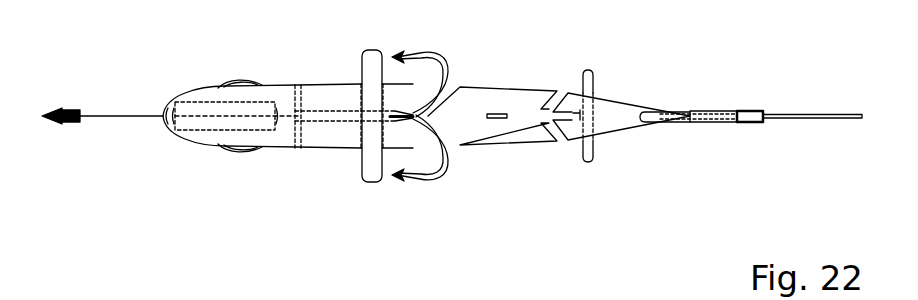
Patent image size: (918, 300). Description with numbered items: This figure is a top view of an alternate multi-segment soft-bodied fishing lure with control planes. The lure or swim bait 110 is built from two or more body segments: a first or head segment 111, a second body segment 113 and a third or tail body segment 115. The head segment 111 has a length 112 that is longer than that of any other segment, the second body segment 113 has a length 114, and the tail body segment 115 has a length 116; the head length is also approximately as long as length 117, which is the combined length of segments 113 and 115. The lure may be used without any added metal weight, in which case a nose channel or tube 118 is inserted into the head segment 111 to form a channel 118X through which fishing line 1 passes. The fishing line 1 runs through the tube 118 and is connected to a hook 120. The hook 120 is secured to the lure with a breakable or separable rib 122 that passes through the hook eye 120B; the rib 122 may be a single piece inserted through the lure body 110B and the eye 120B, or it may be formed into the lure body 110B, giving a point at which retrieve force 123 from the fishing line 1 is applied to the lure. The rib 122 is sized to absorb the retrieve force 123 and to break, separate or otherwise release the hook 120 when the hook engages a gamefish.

The fishing line 1 is at (93, 118).
The lure or swim bait 110 is at (217, 195).
The lure body 110B is at (150, 132).
The first or head segment 111 is at (272, 88).
The length of head segment 112 is at (443, 185).
The second body segment 113 is at (485, 95).
The length of second body segment 114 is at (552, 173).
The third or tail body segment 115 is at (620, 104).
The length of tail body segment 116 is at (697, 173).
The combined length of second and tail segments 117 is at (698, 210).
The nose channel or tube 118 is at (177, 105).
The channel 118X is at (222, 120).
The hook 120 is at (427, 53).
The hook eye 120B is at (305, 114).
The breakable or separable rib 122 is at (298, 143).
The retrieve force 123 is at (75, 110).